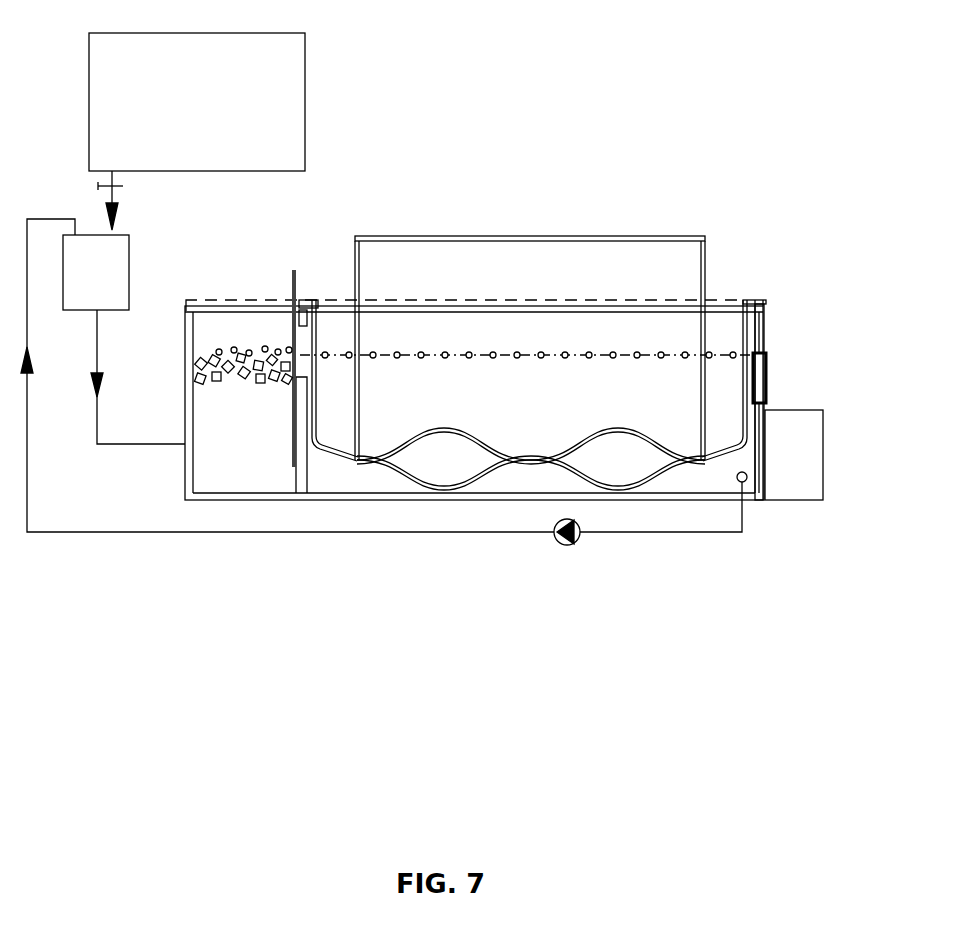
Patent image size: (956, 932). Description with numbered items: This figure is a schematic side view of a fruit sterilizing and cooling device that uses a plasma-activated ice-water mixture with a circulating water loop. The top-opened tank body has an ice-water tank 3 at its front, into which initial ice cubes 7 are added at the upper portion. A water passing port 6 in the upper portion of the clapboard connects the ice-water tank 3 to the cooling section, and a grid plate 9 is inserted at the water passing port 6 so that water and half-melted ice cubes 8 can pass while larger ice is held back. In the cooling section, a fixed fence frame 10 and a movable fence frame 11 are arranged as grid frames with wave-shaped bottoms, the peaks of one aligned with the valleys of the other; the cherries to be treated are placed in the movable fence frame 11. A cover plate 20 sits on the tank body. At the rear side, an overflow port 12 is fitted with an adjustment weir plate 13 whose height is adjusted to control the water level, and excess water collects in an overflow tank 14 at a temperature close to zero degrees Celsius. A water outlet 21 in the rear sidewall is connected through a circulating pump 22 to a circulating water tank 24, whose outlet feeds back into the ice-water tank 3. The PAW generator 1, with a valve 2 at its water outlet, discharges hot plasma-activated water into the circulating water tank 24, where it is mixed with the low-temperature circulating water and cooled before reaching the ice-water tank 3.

The PAW generator 1 is at (112, 86).
The valve 2 is at (99, 186).
The circulating water tank 24 is at (89, 262).
The ice-water tank 3 is at (248, 443).
The water passing port 6 is at (301, 342).
The initial ice cube 7 is at (208, 370).
The half-melted ice cube 8 is at (551, 353).
The grid plate 9 is at (292, 280).
The fixed fence frame 10 is at (327, 455).
The movable fence frame 11 is at (438, 490).
The overflow port 12 is at (764, 336).
The adjustment weir plate 13 is at (766, 372).
The overflow tank 14 is at (798, 443).
The cover plate 20 is at (742, 300).
The water outlet 21 is at (745, 482).
The circulating pump 22 is at (573, 545).